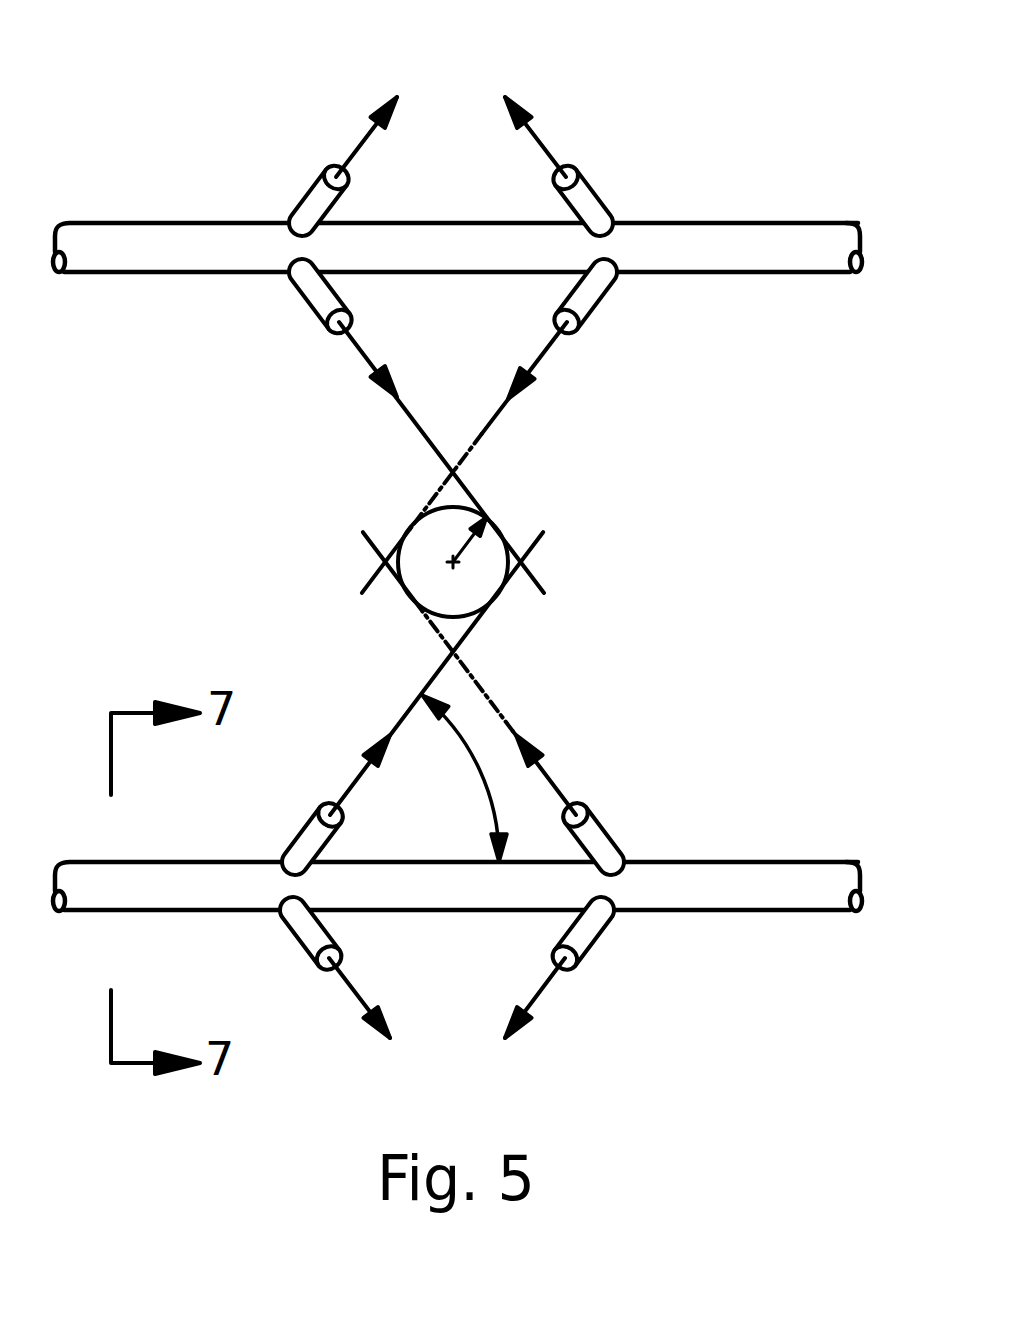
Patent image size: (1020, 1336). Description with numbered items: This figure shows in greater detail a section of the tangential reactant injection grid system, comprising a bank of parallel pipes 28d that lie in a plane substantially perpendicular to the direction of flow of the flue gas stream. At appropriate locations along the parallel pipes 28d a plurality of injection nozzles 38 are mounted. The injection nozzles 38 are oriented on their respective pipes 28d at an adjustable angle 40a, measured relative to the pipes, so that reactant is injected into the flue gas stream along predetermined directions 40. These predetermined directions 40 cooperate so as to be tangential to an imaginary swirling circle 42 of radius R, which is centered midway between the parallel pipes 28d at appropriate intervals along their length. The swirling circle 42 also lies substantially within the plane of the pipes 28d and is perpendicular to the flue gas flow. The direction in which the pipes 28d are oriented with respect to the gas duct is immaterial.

The parallel pipes 28d is at (777, 272).
The injection nozzles 38 is at (303, 192).
The predetermined directions 40 is at (345, 167).
The adjustable angle 40a is at (486, 796).
The swirling circle 42 is at (513, 540).